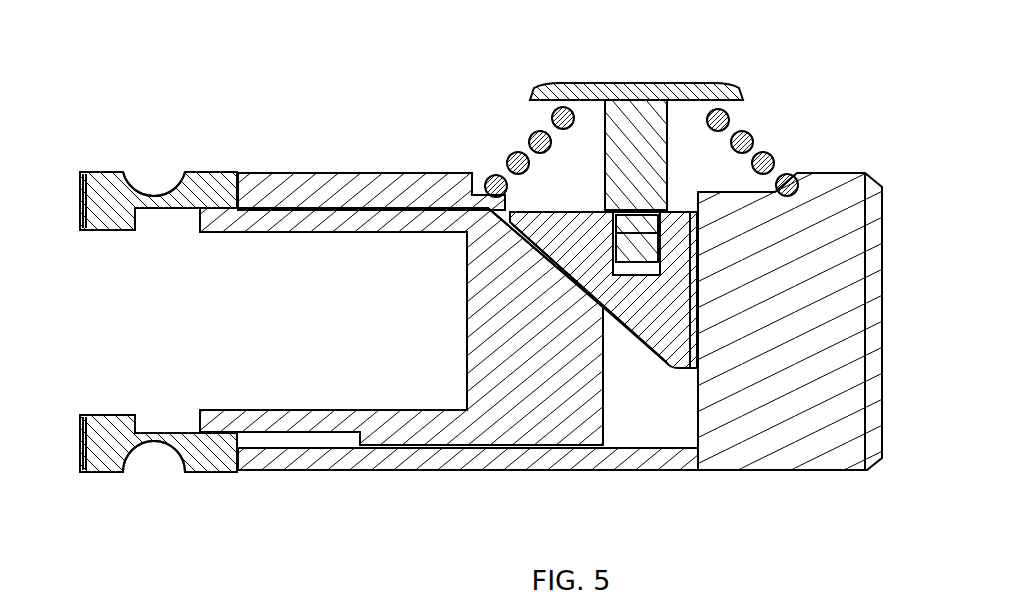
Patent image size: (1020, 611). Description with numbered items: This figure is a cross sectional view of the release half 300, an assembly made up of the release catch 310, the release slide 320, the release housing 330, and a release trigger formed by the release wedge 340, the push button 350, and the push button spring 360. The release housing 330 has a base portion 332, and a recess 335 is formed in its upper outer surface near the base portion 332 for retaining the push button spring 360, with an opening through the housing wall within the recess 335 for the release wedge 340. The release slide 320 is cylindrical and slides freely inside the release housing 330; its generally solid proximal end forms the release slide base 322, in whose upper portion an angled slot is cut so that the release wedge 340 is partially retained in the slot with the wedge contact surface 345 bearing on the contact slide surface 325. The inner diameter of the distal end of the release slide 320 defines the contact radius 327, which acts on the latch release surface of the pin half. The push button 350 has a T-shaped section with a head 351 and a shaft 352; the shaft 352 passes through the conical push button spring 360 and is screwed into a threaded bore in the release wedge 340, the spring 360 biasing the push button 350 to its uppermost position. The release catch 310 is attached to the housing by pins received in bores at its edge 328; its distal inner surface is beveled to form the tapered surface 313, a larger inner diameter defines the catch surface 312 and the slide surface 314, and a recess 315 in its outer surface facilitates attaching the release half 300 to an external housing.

The release half 300 is at (322, 103).
The release catch 310 is at (103, 183).
The catch surface 312 is at (130, 217).
The tapered surface 313 is at (100, 219).
The slide surface 314 is at (158, 209).
The recess 315 is at (153, 199).
The release slide 320 is at (434, 281).
The release slide base 322 is at (480, 289).
The contact slide surface 325 is at (500, 219).
The contact radius 327 is at (222, 220).
The edge 328 is at (240, 198).
The release housing 330 is at (400, 194).
The base portion 332 is at (845, 452).
The recess 335 is at (482, 184).
The release wedge 340 is at (690, 278).
The wedge contact surface 345 is at (650, 332).
The push button 350 is at (636, 112).
The head 351 is at (593, 85).
The shaft 352 is at (653, 171).
The push button spring 360 is at (748, 137).